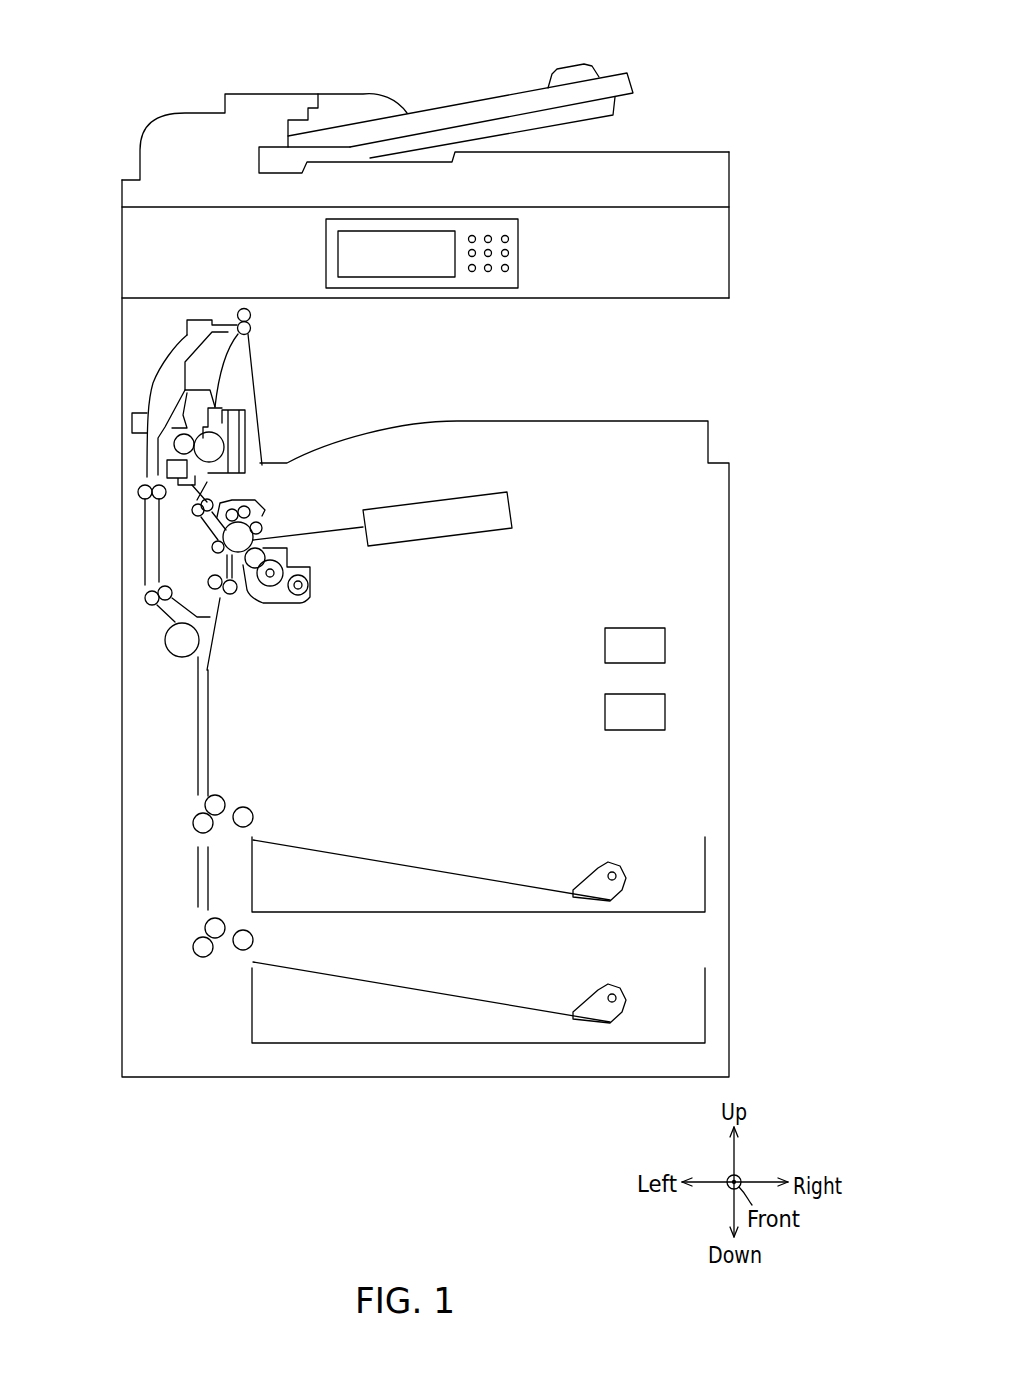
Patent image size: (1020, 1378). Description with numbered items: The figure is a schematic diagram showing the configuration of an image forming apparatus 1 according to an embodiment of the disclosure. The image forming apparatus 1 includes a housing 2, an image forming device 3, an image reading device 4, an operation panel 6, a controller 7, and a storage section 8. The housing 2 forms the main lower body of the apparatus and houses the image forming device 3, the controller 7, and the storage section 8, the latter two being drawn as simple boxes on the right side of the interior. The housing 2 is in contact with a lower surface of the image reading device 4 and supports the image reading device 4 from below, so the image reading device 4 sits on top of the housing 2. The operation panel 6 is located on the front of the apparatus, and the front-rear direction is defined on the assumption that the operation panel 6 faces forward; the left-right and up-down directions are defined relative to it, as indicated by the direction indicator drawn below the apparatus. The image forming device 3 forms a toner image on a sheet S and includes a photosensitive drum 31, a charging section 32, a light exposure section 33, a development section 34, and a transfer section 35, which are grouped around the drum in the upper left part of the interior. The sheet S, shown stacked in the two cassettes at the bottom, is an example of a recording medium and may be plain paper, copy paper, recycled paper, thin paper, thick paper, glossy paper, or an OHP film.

The image forming apparatus 1 is at (725, 103).
The housing 2 is at (121, 710).
The image forming device 3 is at (532, 548).
The image reading device 4 is at (750, 200).
The operation panel 6 is at (373, 223).
The controller 7 is at (668, 647).
The storage section 8 is at (668, 712).
The photosensitive drum 31 is at (226, 533).
The charging section 32 is at (262, 523).
The light exposure section 33 is at (502, 510).
The development section 34 is at (272, 586).
The transfer section 35 is at (214, 549).
The sheet S is at (500, 882).